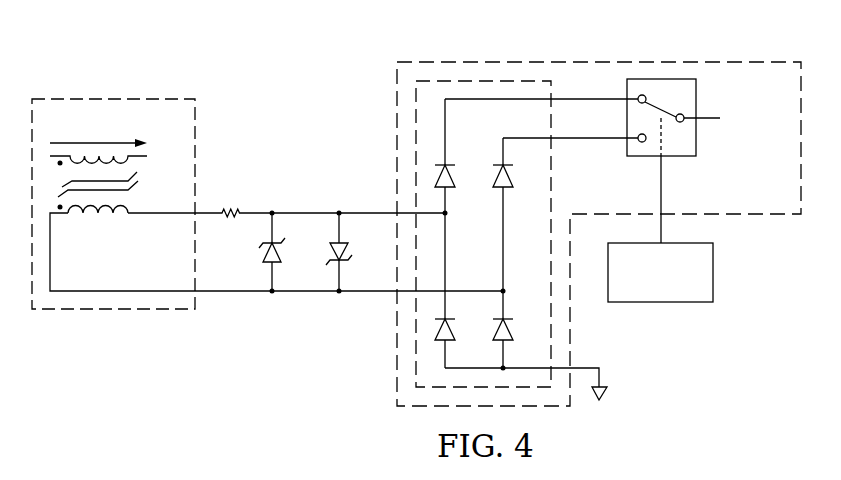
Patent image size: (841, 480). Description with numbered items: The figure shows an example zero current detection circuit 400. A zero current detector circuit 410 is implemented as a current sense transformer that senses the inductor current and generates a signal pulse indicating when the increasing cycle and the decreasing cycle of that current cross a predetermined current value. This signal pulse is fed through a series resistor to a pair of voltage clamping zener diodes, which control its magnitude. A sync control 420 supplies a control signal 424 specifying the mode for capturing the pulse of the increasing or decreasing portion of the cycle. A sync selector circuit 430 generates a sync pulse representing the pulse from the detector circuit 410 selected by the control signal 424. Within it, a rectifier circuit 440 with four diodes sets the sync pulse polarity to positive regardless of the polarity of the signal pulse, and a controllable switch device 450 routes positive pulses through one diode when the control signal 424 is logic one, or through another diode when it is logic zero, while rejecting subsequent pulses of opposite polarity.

The zero current detection circuit 400 is at (238, 56).
The zero current detector circuit 410 is at (100, 97).
The sync control 420 is at (713, 272).
The control signal 424 is at (663, 173).
The sync selector circuit 430 is at (651, 57).
The rectifier circuit 440 is at (552, 176).
The controllable switch device 450 is at (643, 157).